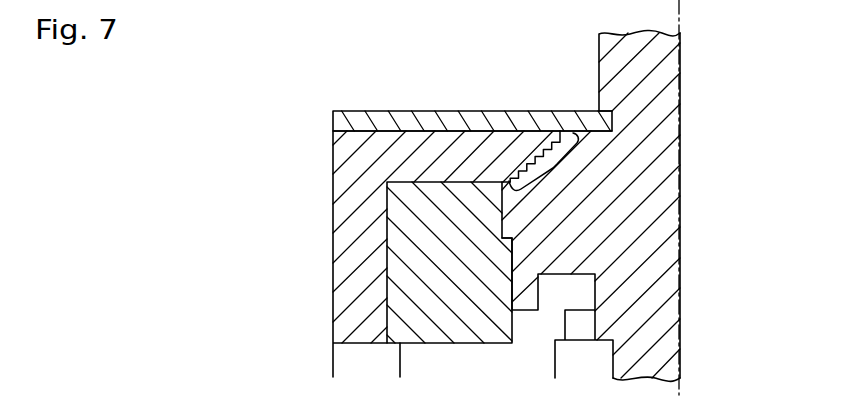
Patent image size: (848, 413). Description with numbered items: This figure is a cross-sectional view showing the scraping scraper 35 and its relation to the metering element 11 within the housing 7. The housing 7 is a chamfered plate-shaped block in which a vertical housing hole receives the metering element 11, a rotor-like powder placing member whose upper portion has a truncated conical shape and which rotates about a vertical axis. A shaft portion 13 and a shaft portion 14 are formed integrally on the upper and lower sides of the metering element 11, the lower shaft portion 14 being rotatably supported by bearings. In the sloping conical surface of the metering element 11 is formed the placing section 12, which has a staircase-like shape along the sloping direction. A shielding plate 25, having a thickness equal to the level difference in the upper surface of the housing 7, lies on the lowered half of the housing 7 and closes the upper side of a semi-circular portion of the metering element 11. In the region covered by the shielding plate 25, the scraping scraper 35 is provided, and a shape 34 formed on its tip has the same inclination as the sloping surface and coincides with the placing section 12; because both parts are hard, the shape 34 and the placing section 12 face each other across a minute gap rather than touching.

The housing 7 is at (410, 297).
The metering element 11 is at (652, 208).
The placing section 12 is at (545, 166).
The shaft portion 13 is at (617, 56).
The shaft portion 14 is at (660, 340).
The shielding plate 25 is at (428, 120).
The shape 34 is at (552, 138).
The scraping scraper 35 is at (333, 204).